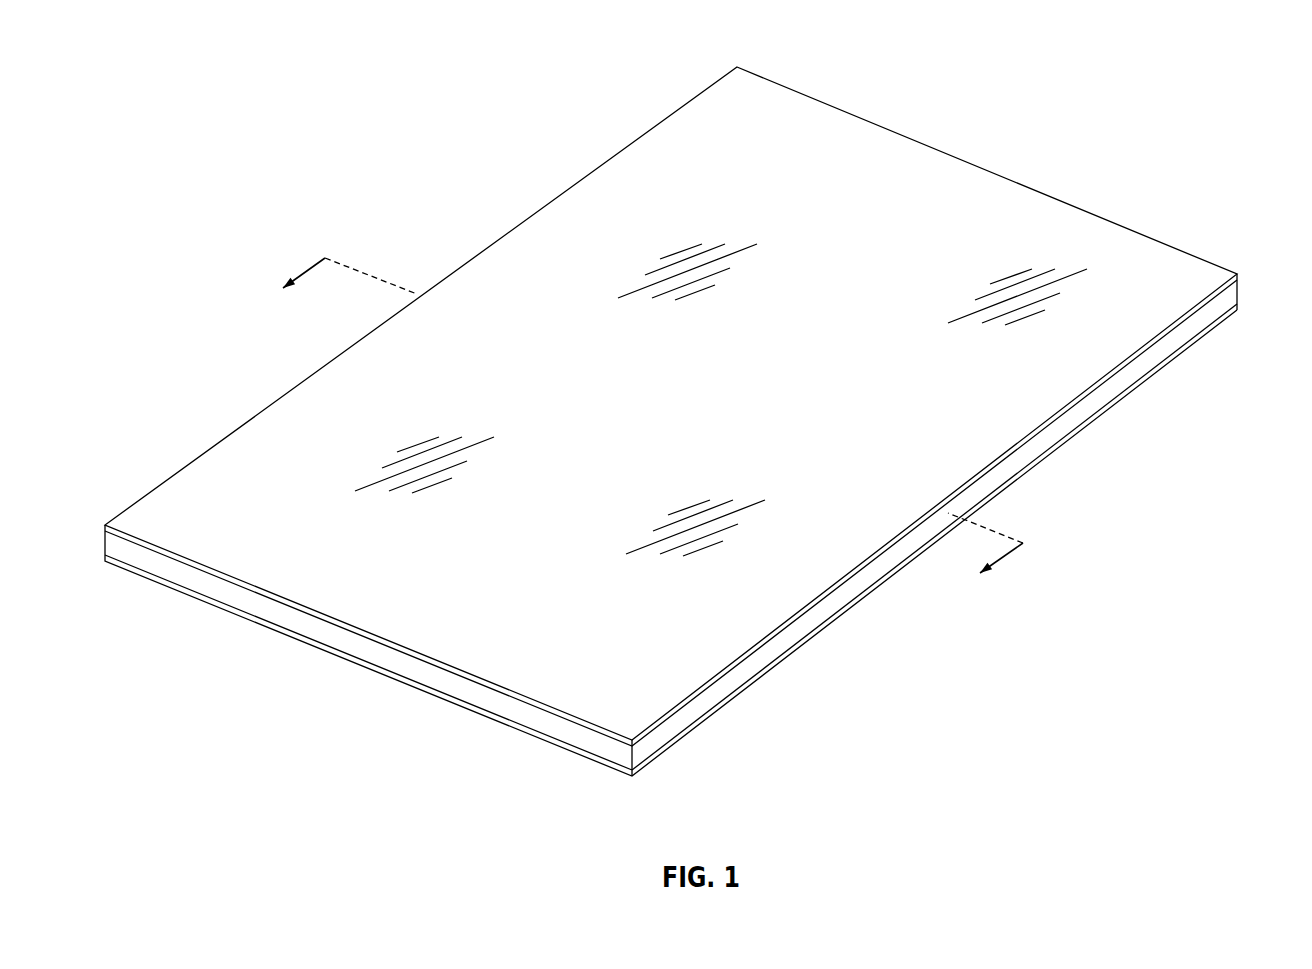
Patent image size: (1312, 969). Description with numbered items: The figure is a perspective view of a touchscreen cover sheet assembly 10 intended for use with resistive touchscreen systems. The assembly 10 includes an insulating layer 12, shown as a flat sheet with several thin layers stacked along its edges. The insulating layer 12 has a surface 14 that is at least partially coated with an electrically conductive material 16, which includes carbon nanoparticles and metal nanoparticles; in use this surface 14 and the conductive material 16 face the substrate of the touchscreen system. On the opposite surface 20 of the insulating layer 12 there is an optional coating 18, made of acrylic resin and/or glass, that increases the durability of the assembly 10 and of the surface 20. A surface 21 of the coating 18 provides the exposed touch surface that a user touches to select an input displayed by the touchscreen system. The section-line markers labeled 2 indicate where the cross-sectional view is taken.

The touchscreen cover sheet assembly 10 is at (266, 82).
The insulating layer 12 is at (1233, 297).
The surface 14 is at (852, 602).
The electrically conductive material 16 is at (1006, 482).
The coating 18 is at (1233, 275).
The surface 20 is at (1168, 330).
The surface 21 is at (1038, 208).
The section line 2 is at (642, 425).